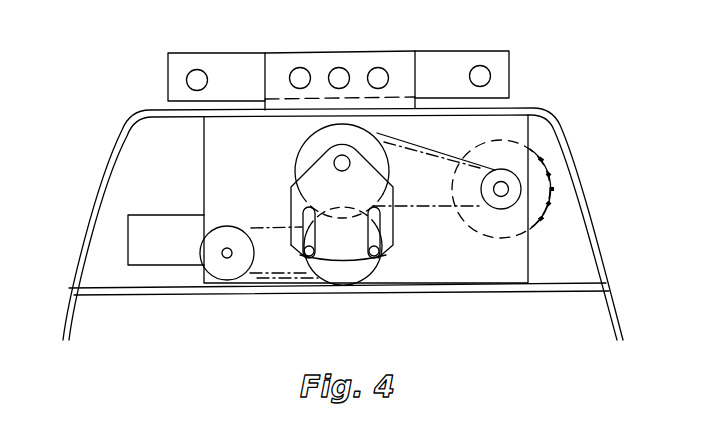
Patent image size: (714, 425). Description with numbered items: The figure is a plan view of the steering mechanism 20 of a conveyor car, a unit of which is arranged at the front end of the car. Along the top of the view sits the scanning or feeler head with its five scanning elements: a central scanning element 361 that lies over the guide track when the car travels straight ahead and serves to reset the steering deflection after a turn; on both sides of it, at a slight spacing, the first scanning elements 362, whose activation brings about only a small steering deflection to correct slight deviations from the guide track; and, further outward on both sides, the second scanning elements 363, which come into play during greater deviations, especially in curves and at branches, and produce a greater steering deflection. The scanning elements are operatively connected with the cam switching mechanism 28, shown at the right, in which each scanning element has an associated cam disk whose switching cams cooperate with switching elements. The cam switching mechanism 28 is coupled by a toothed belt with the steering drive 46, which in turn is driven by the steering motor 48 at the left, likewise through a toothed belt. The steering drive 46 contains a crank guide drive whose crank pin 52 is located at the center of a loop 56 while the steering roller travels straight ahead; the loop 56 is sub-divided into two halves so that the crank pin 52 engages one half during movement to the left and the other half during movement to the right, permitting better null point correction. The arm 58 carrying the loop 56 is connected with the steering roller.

The steering mechanism 20 is at (101, 91).
The cam switching mechanism 28 is at (535, 184).
The central scanning element 361 is at (339, 78).
The first scanning elements 362 is at (300, 78).
The second scanning elements 363 is at (197, 80).
The steering drive 46 is at (403, 252).
The steering motor 48 is at (142, 228).
The crank pin 52 is at (309, 258).
The loop 56 is at (305, 215).
The arm 58 is at (345, 243).